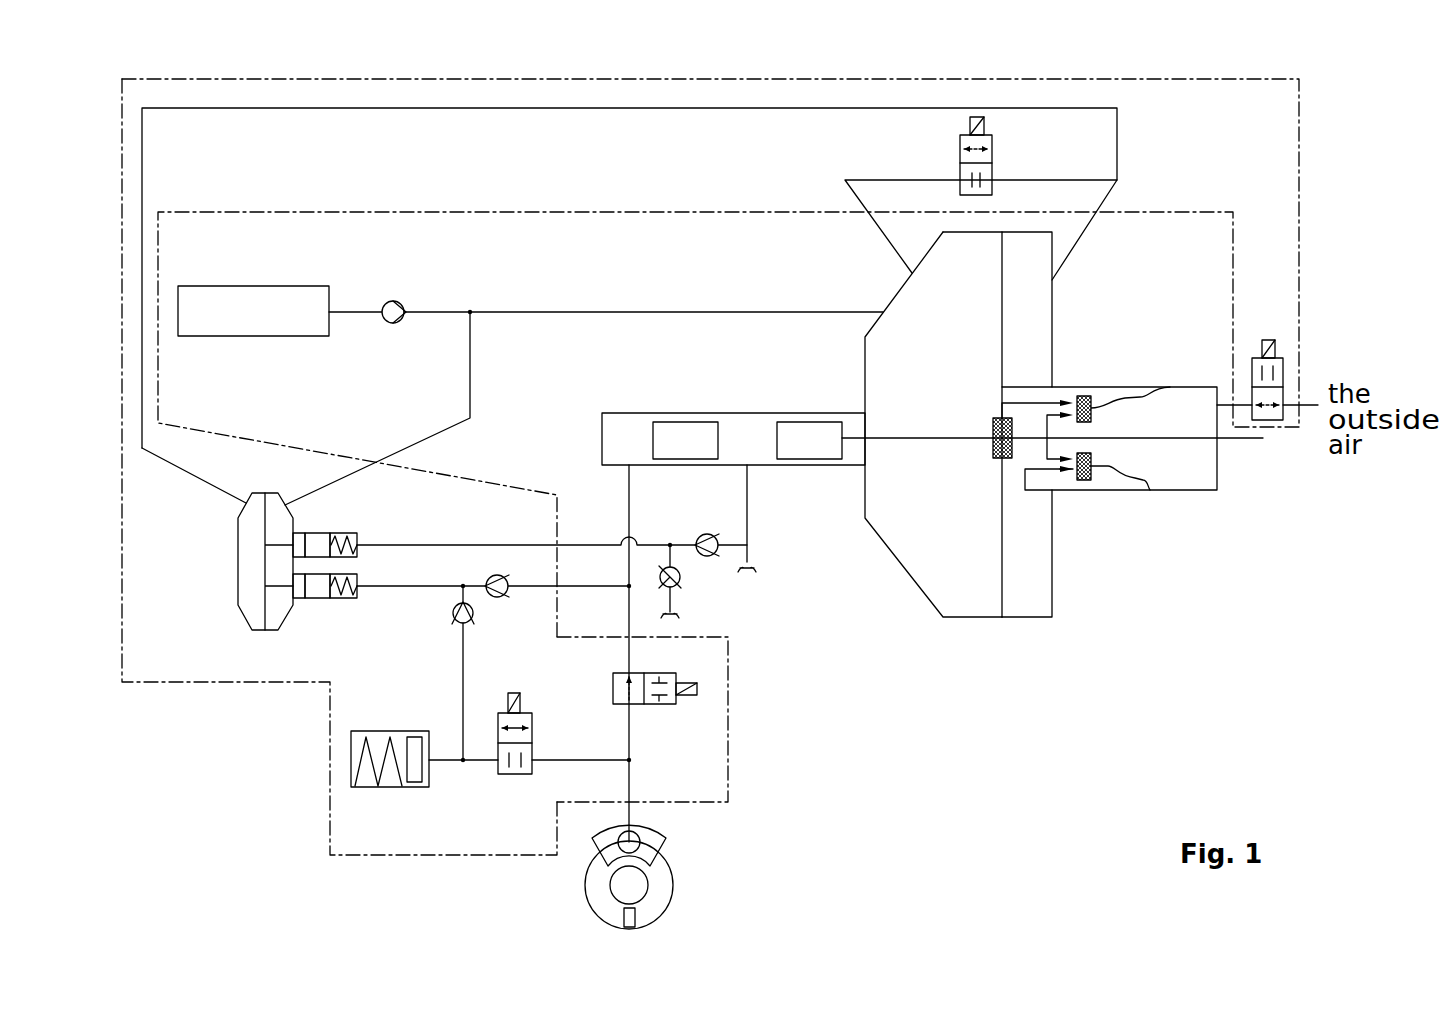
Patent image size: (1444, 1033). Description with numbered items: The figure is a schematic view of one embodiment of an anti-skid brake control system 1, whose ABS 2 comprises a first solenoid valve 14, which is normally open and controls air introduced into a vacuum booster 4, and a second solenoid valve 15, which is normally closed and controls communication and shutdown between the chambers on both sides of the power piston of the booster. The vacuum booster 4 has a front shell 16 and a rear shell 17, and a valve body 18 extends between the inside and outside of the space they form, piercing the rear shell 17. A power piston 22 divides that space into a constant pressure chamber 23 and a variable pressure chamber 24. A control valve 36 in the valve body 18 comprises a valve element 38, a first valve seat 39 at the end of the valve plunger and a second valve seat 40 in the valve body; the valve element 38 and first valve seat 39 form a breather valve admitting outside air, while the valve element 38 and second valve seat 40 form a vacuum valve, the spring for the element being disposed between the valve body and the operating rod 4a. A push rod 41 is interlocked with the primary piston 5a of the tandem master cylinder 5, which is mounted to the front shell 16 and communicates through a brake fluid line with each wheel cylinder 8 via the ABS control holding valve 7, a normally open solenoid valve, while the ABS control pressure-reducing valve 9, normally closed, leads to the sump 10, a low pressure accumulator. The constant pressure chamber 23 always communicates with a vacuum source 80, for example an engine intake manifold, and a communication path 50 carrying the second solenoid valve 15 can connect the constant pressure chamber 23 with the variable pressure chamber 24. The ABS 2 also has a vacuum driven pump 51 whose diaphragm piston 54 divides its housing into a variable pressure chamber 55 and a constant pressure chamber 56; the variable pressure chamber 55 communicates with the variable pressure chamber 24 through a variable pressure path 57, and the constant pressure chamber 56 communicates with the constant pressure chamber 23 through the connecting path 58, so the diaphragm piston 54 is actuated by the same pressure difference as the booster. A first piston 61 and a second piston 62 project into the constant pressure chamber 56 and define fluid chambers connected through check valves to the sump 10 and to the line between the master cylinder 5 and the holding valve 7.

The brake system 1 is at (910, 705).
The ABS 2 is at (730, 742).
The vacuum booster 4 is at (1048, 456).
The operating rod 4a is at (1246, 440).
The tandem master cylinder 5 is at (733, 435).
The primary piston 5a is at (813, 460).
The ABS control holding valve 7 is at (670, 705).
The wheel cylinder 8 is at (656, 839).
The ABS control pressure-reducing valve 9 is at (520, 775).
The sump 10 is at (380, 788).
The first solenoid valve 14 is at (1283, 348).
The second solenoid valve 15 is at (993, 143).
The front shell 16 is at (893, 554).
The rear shell 17 is at (1052, 583).
The valve body 18 is at (1082, 387).
The power piston 22 is at (1002, 530).
The constant pressure chamber 23 is at (962, 323).
The variable pressure chamber 24 is at (1040, 323).
The control valve 36 is at (1086, 493).
The valve element 38 is at (1113, 467).
The first valve seat 39 is at (1090, 480).
The second valve seat 40 is at (1077, 510).
The push rod 41 is at (912, 440).
The communication path 50 is at (1085, 231).
The vacuum driven pump 51 is at (249, 579).
The diaphragm piston 54 is at (259, 626).
The variable pressure chamber 55 is at (248, 543).
The constant pressure chamber 56 is at (283, 615).
The variable pressure path 57 is at (653, 110).
The passage 58 is at (471, 356).
The first piston 61 is at (321, 599).
The second piston 62 is at (322, 533).
The vacuum source 80 is at (304, 286).